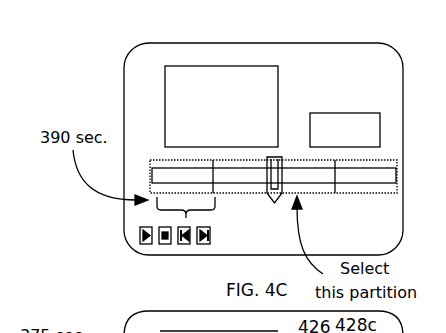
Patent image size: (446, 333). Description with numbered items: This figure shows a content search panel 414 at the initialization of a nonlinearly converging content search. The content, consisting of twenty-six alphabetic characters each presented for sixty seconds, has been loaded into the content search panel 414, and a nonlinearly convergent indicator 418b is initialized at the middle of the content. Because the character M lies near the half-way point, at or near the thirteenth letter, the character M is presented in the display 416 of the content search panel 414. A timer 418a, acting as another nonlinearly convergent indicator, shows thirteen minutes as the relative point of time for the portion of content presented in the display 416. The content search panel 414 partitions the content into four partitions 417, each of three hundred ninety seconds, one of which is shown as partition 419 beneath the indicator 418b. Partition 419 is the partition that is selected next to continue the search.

The content search panel 414 is at (336, 43).
The display 416 is at (284, 72).
The partitions 417 is at (188, 219).
The timer 418a is at (369, 113).
The nonlinearly convergent indicator 418b is at (277, 205).
The partition 419 is at (335, 194).